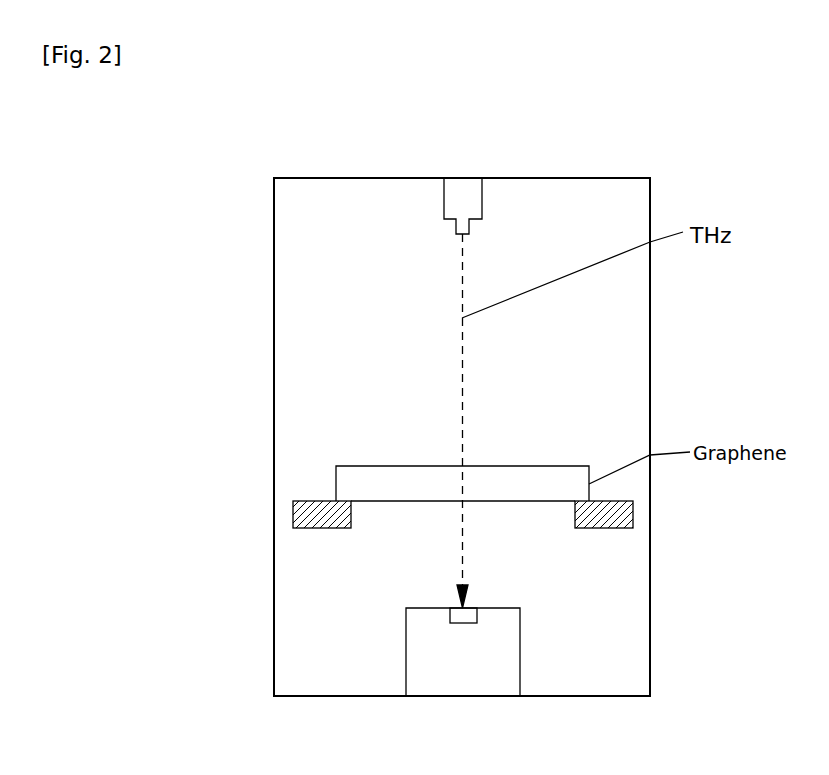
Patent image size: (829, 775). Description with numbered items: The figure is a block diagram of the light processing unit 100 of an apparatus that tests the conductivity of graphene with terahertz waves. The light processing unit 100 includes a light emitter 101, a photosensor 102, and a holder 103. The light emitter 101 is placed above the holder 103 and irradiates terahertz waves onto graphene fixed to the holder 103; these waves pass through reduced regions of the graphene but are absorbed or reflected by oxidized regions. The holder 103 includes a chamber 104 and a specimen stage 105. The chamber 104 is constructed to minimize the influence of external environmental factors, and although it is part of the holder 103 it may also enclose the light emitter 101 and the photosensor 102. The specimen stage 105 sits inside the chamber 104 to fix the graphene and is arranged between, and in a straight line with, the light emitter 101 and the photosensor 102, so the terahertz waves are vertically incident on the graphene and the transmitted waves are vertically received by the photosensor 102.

The light processing unit 100 is at (104, 188).
The light emitter 101 is at (444, 200).
The photosensor 102 is at (406, 652).
The holder 103 is at (371, 439).
The chamber 104 is at (274, 352).
The specimen stage 105 is at (323, 501).